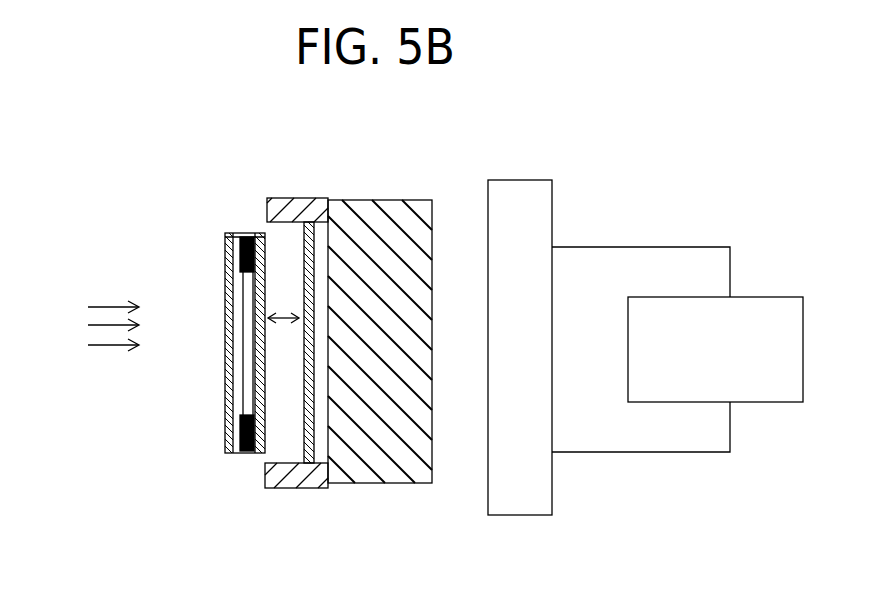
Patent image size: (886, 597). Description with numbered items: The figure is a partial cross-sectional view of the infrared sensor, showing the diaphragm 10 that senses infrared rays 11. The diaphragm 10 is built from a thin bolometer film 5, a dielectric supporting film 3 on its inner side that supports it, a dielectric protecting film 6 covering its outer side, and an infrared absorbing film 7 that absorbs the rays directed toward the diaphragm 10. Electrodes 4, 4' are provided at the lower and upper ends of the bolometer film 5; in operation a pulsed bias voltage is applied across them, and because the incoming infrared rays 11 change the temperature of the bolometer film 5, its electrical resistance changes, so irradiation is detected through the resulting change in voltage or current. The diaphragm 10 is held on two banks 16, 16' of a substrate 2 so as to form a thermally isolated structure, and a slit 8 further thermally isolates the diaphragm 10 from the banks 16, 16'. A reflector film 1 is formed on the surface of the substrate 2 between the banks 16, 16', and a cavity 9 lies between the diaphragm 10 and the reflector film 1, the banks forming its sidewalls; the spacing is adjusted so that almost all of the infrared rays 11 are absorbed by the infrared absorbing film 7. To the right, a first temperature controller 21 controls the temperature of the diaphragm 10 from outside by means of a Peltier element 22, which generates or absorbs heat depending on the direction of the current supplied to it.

The reflector film 1 is at (292, 222).
The substrate 2 is at (385, 467).
The dielectric supporting film 3 is at (266, 248).
The electrode 4 is at (203, 459).
The electrode 4' is at (225, 201).
The bolometer film 5 is at (226, 342).
The dielectric protecting film 6 is at (225, 302).
The infrared absorbing film 7 is at (237, 404).
The slit 8 is at (257, 462).
The cavity 9 is at (280, 263).
The diaphragm 10 is at (213, 267).
The infrared rays 11 is at (100, 348).
The bank 16 is at (348, 171).
The bank 16' is at (296, 522).
The first temperature controller 21 is at (772, 306).
The Peltier element 22 is at (542, 198).